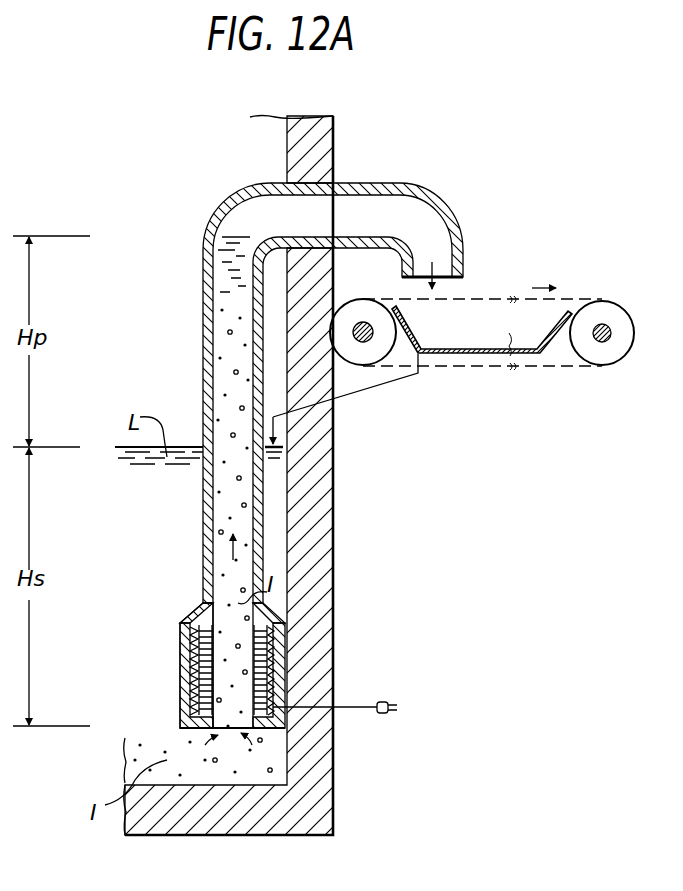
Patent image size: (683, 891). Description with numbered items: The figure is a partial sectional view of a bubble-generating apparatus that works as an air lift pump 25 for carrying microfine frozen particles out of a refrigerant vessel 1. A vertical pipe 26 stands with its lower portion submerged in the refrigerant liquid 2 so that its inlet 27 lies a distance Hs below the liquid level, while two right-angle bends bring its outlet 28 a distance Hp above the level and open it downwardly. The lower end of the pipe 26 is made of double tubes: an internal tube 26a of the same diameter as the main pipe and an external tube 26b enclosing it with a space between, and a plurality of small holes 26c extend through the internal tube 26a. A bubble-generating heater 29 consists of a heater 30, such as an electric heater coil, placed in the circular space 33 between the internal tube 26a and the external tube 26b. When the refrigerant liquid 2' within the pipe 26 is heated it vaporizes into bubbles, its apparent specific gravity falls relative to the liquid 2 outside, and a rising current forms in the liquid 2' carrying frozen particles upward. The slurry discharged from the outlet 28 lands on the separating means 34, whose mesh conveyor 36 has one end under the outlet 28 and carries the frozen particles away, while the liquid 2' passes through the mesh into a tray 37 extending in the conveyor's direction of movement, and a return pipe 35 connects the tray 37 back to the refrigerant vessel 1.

The refrigerant vessel 1 is at (332, 440).
The refrigerant liquid 2 is at (150, 475).
The refrigerant liquid within the pipe 2' is at (204, 263).
The air lift pump 25 is at (373, 182).
The pipe 26 is at (265, 510).
The internal tube 26a is at (215, 612).
The external tube 26b is at (180, 657).
The small holes 26c is at (225, 697).
The inlet 27 is at (237, 733).
The outlet 28 is at (442, 283).
The bubble-generating heater 29 is at (190, 689).
The heater 30 is at (270, 650).
The circular space 33 is at (273, 681).
The means for separating frozen particles from the refrigerant liquid 34 is at (574, 291).
The return pipe 35 is at (378, 385).
The mesh conveyor 36 is at (510, 300).
The tray 37 is at (485, 353).